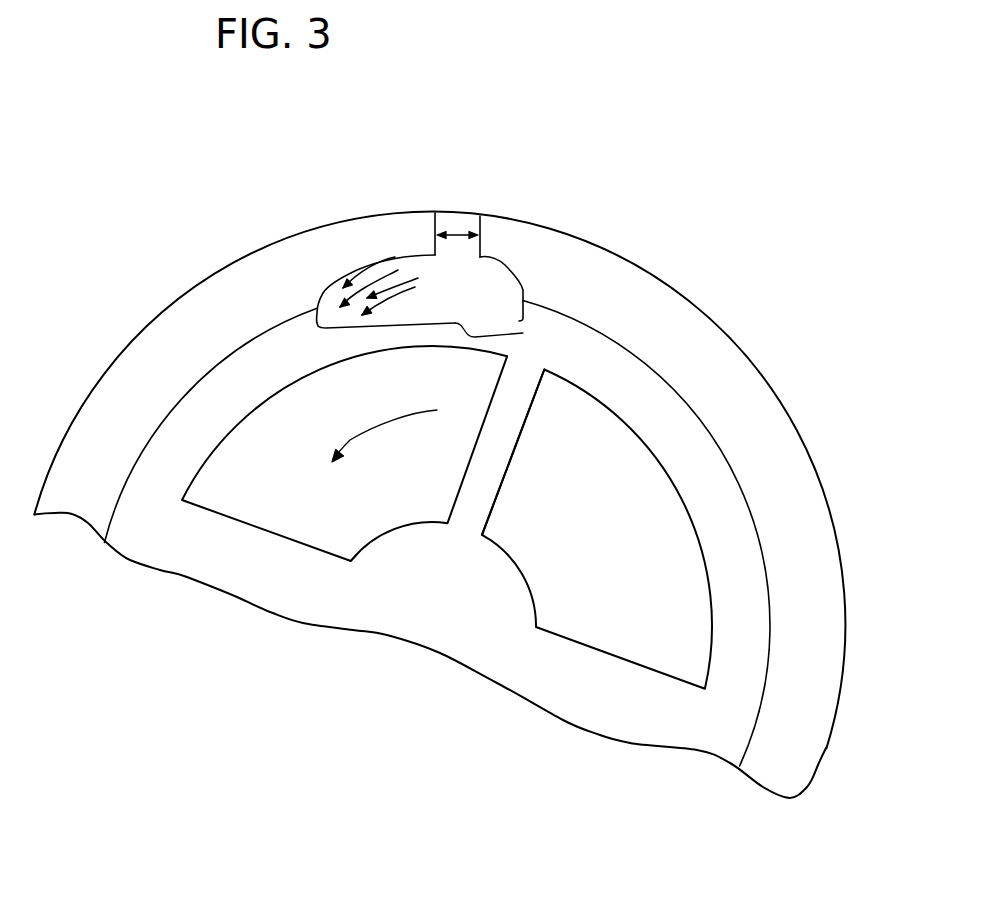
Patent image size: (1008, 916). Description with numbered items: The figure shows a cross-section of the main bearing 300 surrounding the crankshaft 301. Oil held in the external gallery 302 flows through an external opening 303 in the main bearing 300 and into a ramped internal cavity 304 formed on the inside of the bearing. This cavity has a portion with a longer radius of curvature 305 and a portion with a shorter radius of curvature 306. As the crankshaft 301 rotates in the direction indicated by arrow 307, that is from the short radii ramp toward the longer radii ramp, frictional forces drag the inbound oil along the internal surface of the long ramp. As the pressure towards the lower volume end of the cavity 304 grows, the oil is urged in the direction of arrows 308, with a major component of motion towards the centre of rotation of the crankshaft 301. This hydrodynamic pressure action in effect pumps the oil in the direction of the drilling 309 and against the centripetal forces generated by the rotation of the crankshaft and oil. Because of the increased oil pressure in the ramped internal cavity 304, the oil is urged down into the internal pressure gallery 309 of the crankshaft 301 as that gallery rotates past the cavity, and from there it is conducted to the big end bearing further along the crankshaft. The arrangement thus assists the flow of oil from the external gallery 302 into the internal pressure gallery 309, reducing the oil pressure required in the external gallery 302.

The main bearing 300 is at (763, 400).
The crankshaft 301 is at (697, 640).
The external gallery 302 is at (371, 186).
The external opening 303 is at (459, 230).
The ramped internal cavity 304 is at (523, 333).
The portion with a longer radius of curvature 305 is at (325, 287).
The portion with a shorter radius of curvature 306 is at (523, 278).
The arrow indicating direction of crankshaft rotation 307 is at (385, 423).
The arrows indicating direction of urged oil 308 is at (390, 283).
The internal pressure gallery 309 is at (478, 493).